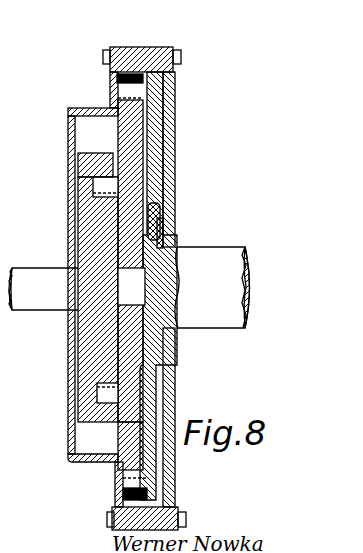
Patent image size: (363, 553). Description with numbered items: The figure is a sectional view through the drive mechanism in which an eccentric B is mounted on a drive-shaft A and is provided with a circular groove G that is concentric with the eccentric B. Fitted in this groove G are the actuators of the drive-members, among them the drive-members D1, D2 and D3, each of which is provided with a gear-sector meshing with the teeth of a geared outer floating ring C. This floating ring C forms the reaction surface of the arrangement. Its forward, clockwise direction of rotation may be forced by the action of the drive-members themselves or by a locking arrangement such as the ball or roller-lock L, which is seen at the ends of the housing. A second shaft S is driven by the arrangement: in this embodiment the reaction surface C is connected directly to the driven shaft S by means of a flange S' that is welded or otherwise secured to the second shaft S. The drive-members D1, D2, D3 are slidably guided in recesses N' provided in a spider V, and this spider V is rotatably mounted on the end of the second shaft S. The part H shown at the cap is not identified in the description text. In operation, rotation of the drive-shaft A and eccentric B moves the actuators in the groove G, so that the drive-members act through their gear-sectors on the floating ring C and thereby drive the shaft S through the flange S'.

The cap H is at (141, 45).
The ball or roller-lock L is at (108, 79).
The geared outer floating ring C is at (110, 88).
The drive-member D1 is at (115, 136).
The drive-member D2 is at (59, 297).
The circular groove G is at (78, 187).
The eccentric B is at (70, 228).
The drive-shaft A is at (34, 312).
The drive-member D3 is at (116, 438).
The flange S' is at (190, 289).
The recesses N' is at (181, 286).
The spider V is at (177, 227).
The second shaft S is at (216, 308).